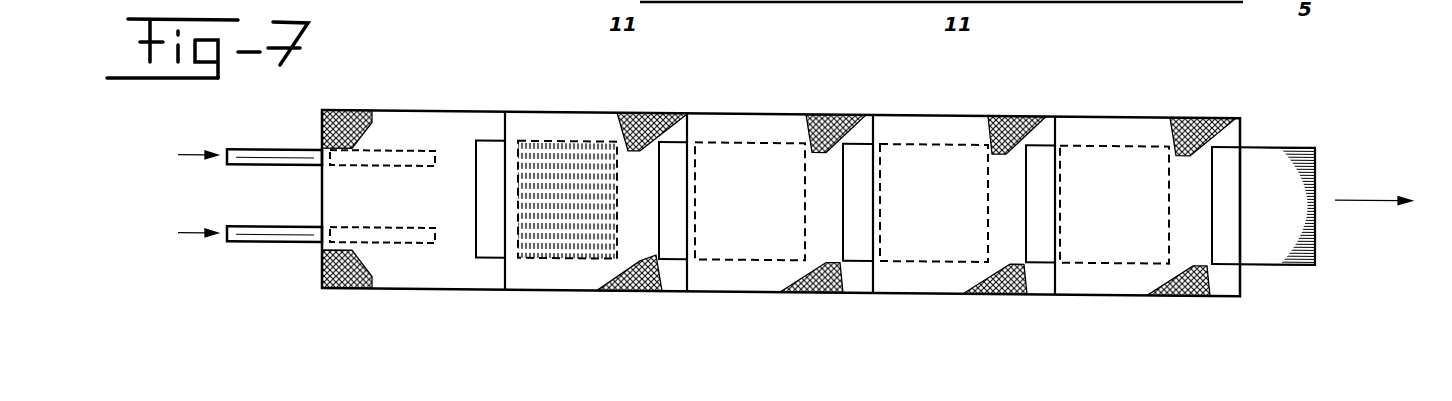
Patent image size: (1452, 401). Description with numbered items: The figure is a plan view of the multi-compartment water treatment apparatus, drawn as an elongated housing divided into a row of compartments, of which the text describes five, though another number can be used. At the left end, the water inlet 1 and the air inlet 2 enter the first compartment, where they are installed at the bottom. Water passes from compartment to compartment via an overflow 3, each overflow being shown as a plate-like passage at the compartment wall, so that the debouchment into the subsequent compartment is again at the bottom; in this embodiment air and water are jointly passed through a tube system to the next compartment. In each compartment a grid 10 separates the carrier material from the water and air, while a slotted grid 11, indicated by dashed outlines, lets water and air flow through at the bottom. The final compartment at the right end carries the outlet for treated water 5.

The water inlet 1 is at (272, 150).
The air inlet 2 is at (284, 243).
The overflow 3 is at (497, 139).
The outlet for treated water 5 is at (1280, 143).
The grid 10 is at (361, 110).
The slotted grid 11 is at (558, 139).